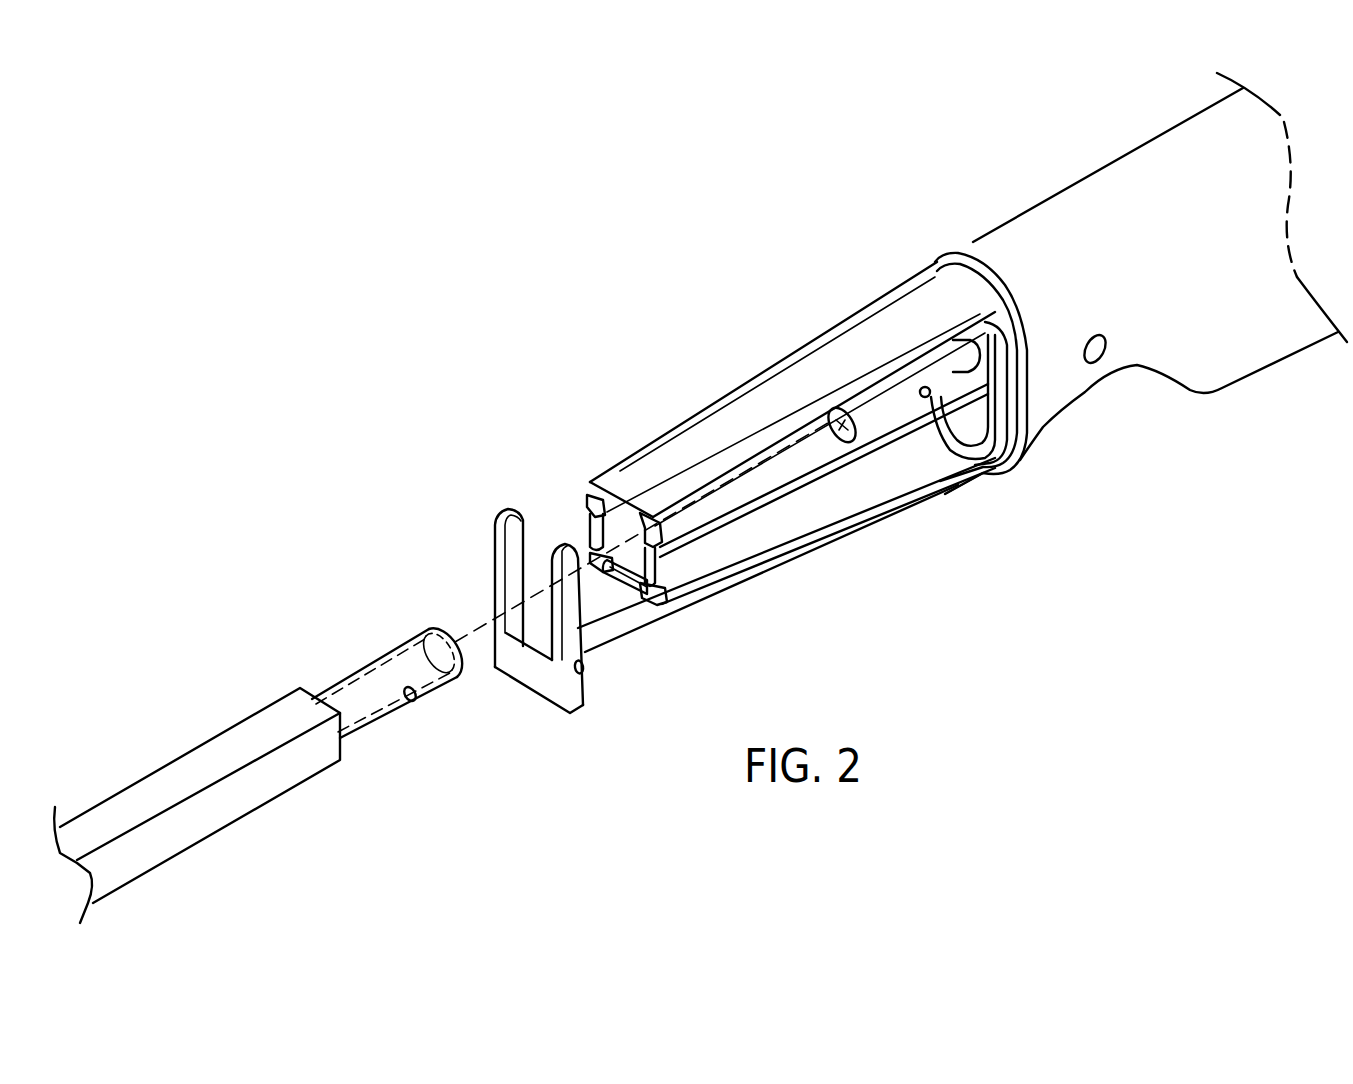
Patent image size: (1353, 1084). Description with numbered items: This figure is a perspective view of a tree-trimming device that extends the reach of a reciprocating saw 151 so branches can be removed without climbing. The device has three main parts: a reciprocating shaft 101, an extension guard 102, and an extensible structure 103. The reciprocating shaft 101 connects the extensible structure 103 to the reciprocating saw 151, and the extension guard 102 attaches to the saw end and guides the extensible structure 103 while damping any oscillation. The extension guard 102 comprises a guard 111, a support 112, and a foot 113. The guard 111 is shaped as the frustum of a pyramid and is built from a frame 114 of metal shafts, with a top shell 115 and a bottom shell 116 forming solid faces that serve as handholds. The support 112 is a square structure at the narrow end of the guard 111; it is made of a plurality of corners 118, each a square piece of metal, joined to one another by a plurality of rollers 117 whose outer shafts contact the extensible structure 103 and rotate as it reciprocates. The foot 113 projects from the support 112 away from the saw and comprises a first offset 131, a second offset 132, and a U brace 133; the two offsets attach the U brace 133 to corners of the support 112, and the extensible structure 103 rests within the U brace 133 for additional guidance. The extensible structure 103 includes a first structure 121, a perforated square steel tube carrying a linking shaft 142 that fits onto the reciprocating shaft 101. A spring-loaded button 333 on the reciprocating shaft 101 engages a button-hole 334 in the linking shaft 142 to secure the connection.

The reciprocating saw 151 is at (1083, 200).
The reciprocating shaft 101 is at (953, 365).
The extension guard 102 is at (833, 330).
The top shell 115 is at (710, 425).
The plurality of corners 118 is at (593, 492).
The plurality of rollers 117 is at (597, 533).
The second offset 132 is at (592, 600).
The spring-loaded button 333 is at (931, 391).
The guard 111 is at (955, 480).
The bottom shell 116 is at (900, 480).
The frame 114 is at (835, 523).
The support 112 is at (687, 534).
The extensible structure 103 is at (373, 744).
The first offset 131 is at (630, 642).
The U brace 133 is at (552, 688).
The foot 113 is at (577, 717).
The linking shaft 142 is at (377, 727).
The first structure 121 is at (263, 780).
The button-hole 334 is at (415, 700).